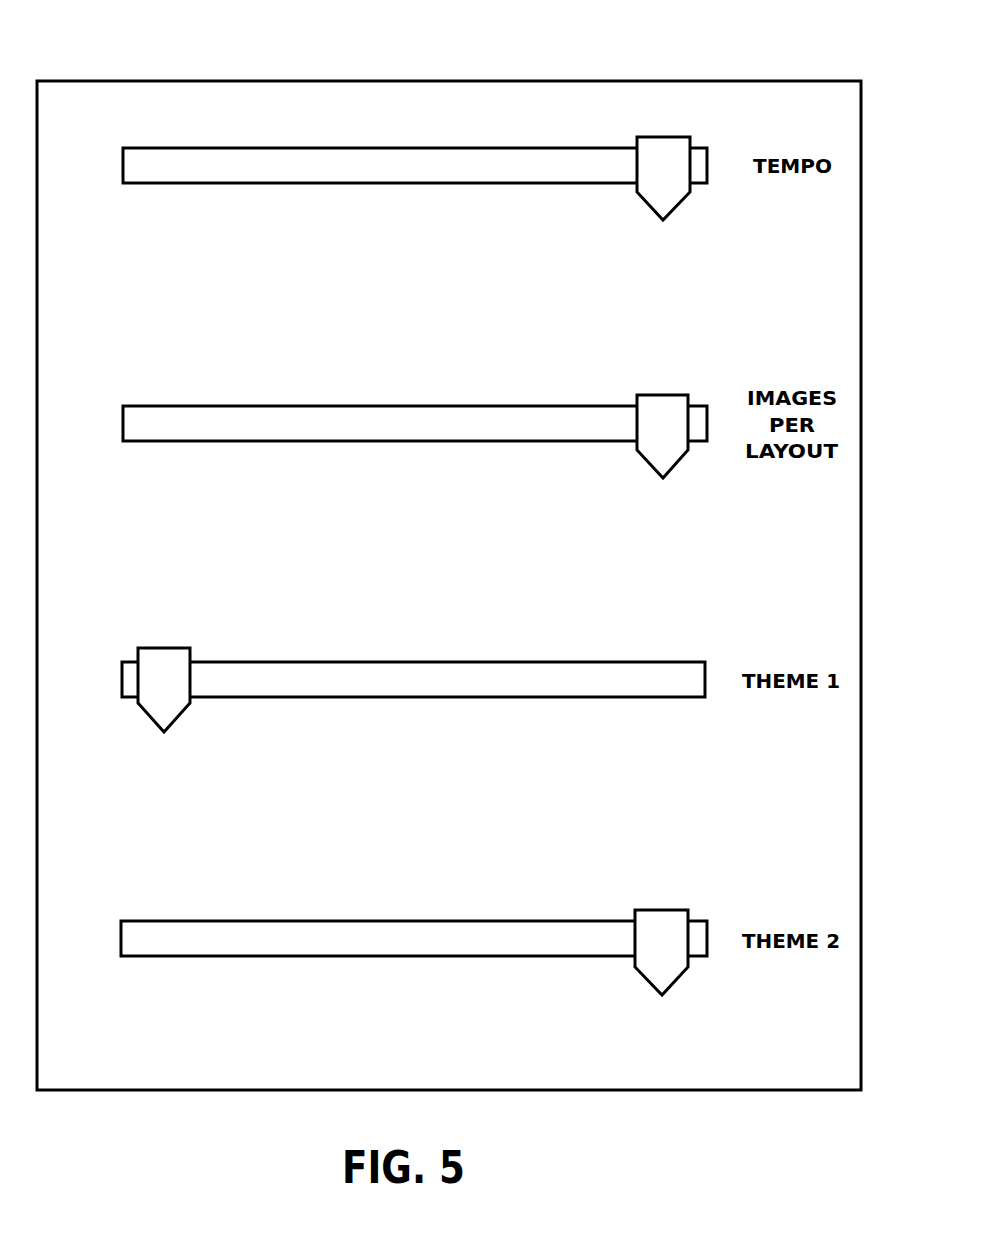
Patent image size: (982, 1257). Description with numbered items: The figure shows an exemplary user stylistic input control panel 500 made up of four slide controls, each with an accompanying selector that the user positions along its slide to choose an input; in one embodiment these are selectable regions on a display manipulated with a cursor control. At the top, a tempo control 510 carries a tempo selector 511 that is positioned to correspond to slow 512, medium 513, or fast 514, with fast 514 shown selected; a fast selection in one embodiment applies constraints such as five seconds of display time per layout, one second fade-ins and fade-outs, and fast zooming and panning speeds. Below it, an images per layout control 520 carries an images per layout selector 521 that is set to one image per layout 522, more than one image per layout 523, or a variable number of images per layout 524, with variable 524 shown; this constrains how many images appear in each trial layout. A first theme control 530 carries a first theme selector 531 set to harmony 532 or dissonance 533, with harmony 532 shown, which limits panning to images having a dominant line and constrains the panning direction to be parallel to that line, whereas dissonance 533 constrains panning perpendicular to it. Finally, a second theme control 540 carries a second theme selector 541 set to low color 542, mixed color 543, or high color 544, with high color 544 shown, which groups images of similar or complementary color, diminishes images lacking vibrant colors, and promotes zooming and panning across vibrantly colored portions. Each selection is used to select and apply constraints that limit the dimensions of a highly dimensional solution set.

The user stylistic input control panel 500 is at (114, 52).
The tempo control 510 is at (123, 165).
The tempo selector 511 is at (663, 137).
The slow 512 is at (160, 248).
The medium 513 is at (412, 248).
The fast 514 is at (657, 250).
The images per layout control 520 is at (123, 423).
The images per layout selector 521 is at (663, 395).
The one image per layout 522 is at (160, 506).
The more than one image per layout 523 is at (412, 506).
The variable number of images per layout 524 is at (658, 508).
The theme 1 control 530 is at (122, 680).
The theme 1 selector 531 is at (164, 648).
The harmony 532 is at (160, 762).
The dissonance 533 is at (660, 763).
The theme 2 control 540 is at (121, 940).
The theme 2 selector 541 is at (662, 910).
The low color 542 is at (160, 1020).
The mixed color 543 is at (412, 1022).
The high color 544 is at (658, 1022).